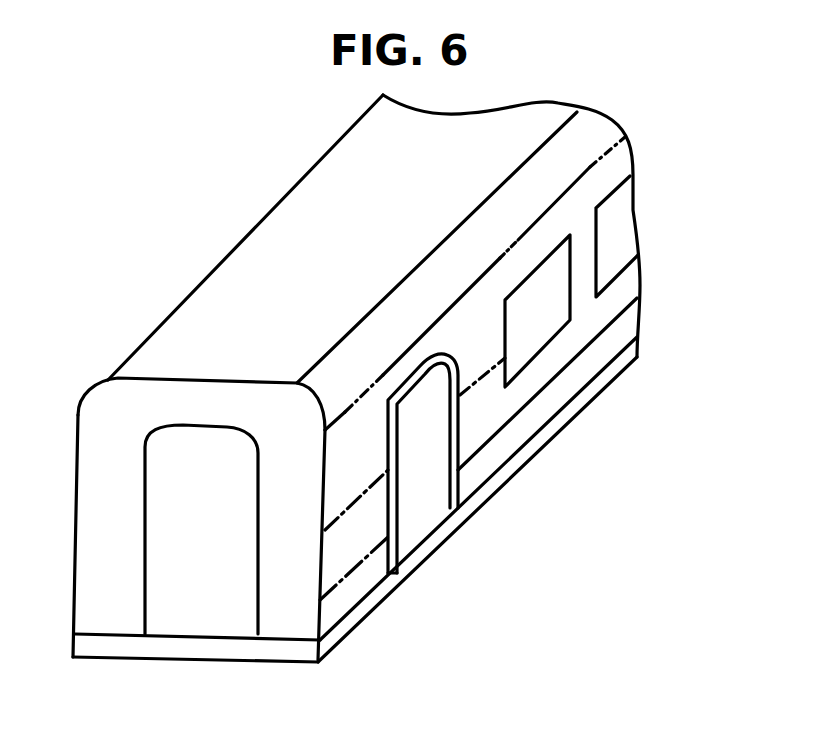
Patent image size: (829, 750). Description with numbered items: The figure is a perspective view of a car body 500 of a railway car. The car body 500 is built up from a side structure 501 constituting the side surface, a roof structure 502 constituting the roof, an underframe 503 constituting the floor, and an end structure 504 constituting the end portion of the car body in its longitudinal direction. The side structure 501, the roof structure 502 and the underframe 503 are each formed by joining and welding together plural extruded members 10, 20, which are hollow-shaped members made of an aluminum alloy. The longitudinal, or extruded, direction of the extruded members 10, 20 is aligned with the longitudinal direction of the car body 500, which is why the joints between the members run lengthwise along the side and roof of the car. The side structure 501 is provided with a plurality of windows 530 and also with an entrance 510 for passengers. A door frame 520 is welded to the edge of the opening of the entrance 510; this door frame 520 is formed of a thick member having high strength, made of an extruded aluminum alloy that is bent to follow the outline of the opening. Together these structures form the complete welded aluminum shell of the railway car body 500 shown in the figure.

The car body 500 is at (240, 200).
The side structure 501 is at (594, 422).
The roof structure 502 is at (195, 330).
The underframe 503 is at (193, 650).
The end structure 504 is at (288, 620).
The entrance 510 is at (427, 513).
The door frame 520 is at (377, 566).
The window 530 is at (625, 220).
The extruded member 10 is at (477, 475).
The extruded member 20 is at (503, 413).